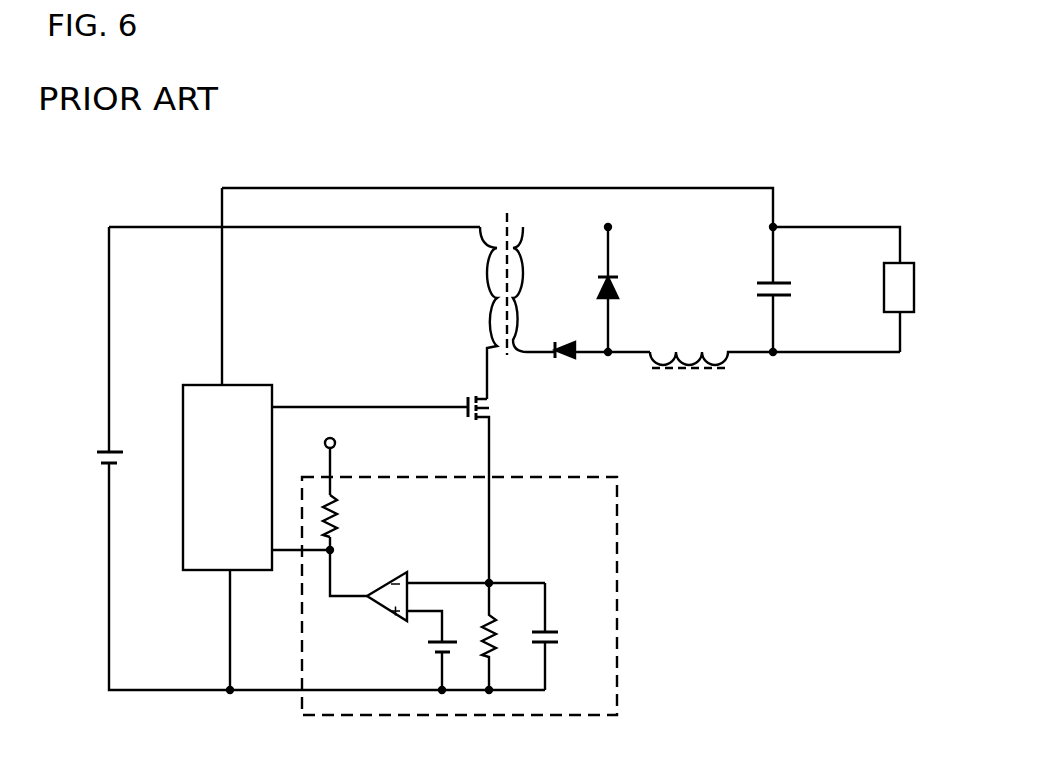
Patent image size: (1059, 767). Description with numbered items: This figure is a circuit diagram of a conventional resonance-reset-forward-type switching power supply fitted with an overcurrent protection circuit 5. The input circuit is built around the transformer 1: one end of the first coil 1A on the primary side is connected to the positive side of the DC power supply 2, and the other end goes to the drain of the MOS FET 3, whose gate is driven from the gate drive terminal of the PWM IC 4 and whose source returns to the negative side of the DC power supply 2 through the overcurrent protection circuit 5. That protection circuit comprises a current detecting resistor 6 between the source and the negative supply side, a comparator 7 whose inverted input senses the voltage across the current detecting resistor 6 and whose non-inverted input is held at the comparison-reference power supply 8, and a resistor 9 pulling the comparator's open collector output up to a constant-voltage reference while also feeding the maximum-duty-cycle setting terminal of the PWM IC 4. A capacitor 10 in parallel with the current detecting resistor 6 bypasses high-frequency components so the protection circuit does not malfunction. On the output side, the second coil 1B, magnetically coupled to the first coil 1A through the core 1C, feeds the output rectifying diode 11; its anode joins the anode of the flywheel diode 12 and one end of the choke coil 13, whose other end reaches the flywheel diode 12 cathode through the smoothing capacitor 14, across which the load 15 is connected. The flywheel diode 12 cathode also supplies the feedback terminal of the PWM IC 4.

The transformer 1 is at (502, 244).
The first coil 1A is at (477, 243).
The second coil 1B is at (538, 247).
The core 1C is at (507, 210).
The DC power supply 2 is at (96, 456).
The MOS FET 3 is at (493, 405).
The PWM IC 4 is at (206, 384).
The overcurrent protection circuit 5 is at (618, 671).
The current detecting resistor 6 is at (499, 650).
The comparator 7 is at (388, 581).
The comparison-reference power supply 8 is at (449, 667).
The resistor 9 is at (336, 522).
The capacitor 10 is at (576, 625).
The output rectifying diode 11 is at (577, 356).
The flywheel diode 12 is at (617, 288).
The choke coil 13 is at (670, 372).
The smoothing capacitor 14 is at (795, 291).
The load 15 is at (920, 282).